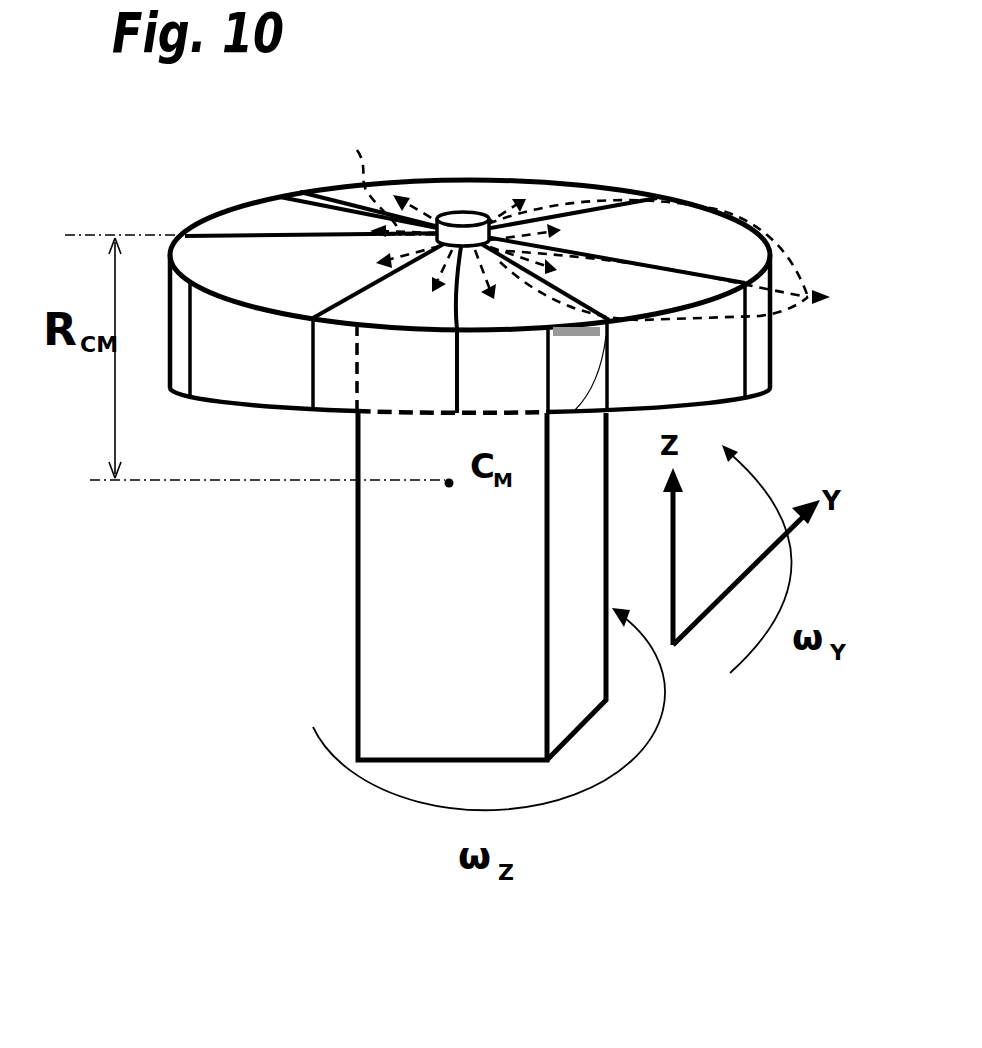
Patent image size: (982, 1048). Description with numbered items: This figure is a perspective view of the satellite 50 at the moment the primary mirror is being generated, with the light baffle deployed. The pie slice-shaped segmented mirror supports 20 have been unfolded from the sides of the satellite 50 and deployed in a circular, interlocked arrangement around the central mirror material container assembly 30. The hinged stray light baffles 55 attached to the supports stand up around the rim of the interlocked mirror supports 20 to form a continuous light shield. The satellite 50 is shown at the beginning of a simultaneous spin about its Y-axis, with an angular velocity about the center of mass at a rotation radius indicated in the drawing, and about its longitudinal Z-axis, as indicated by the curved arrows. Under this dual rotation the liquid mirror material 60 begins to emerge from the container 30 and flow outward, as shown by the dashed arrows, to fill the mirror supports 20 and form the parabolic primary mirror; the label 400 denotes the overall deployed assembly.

The spacecraft / rotating platform assembly 400 is at (198, 201).
The segmented mirror supports 20 is at (440, 212).
The mirror material container assembly 30 is at (470, 213).
The hinged stray light baffles 55 is at (470, 334).
The liquid mirror material 60 is at (340, 148).
The satellite 50 is at (298, 675).